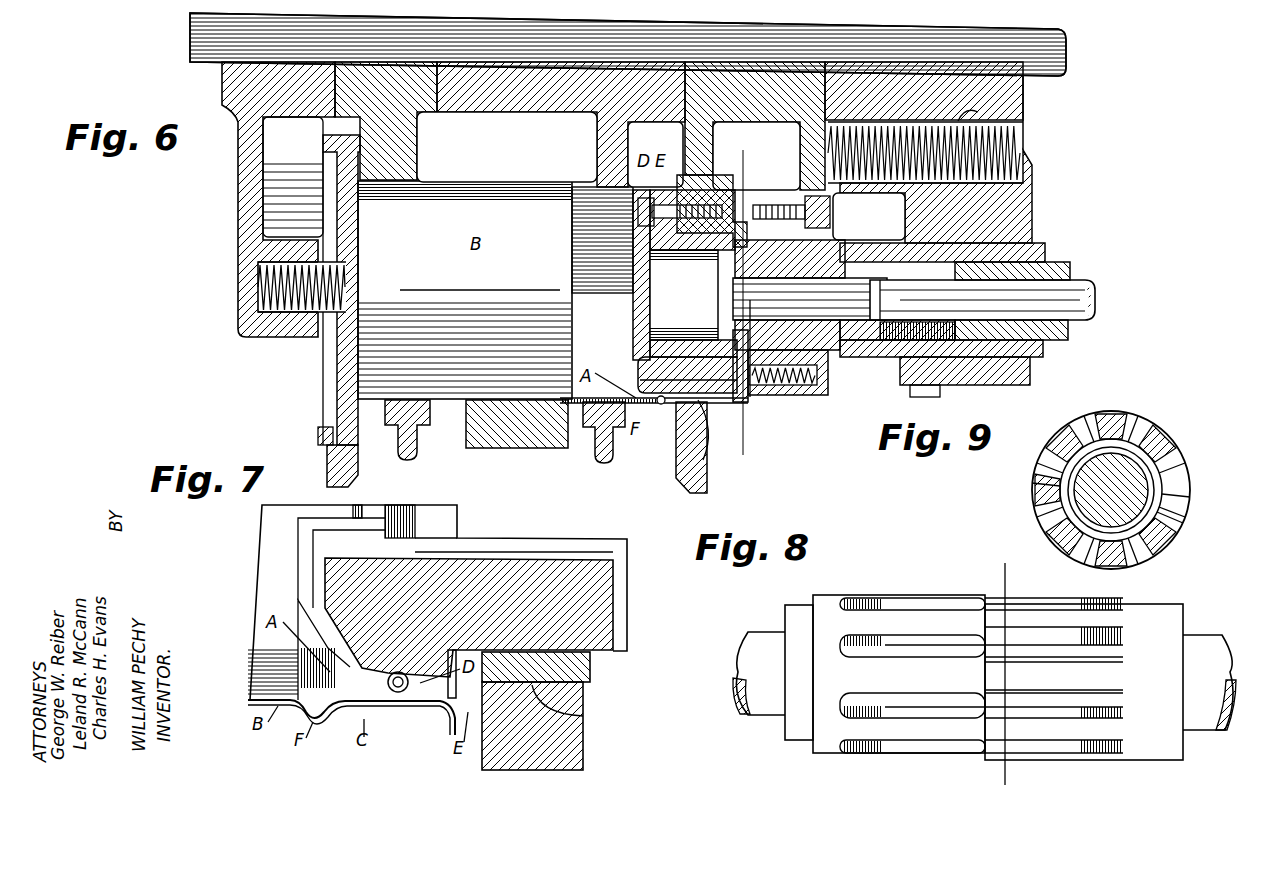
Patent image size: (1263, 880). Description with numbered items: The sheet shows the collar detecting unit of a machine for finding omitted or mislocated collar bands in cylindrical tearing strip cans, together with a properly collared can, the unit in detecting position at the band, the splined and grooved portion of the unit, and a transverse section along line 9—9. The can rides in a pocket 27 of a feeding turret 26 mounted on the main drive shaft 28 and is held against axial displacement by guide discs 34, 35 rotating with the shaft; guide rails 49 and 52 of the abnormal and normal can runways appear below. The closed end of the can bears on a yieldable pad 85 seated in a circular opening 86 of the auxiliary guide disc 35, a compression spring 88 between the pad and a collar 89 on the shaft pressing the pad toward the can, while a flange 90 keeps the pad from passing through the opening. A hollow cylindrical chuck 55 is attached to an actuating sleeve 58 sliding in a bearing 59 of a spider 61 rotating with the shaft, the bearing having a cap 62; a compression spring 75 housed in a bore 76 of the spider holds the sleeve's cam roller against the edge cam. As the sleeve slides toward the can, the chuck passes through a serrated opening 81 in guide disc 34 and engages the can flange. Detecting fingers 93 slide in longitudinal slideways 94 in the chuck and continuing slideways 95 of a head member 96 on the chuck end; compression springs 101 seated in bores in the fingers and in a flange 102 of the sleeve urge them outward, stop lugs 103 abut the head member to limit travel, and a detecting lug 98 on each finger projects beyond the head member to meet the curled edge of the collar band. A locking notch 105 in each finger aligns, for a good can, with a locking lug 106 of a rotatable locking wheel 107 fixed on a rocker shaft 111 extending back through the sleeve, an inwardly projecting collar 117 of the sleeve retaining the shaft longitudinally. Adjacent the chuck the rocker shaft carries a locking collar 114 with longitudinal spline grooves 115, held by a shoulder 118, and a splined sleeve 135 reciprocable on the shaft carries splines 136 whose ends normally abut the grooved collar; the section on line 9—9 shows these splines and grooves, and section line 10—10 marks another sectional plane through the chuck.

In FIG. 6, the main drive shaft 28 is at (1068, 50).
In FIG. 6, the feeding turrets 26 is at (400, 137).
In FIG. 6, the can receiving and propelling pockets 27 is at (397, 172).
In FIG. 6, the serrated opening 81 is at (697, 163).
In FIG. 7, the serrated opening 81 is at (585, 714).
In FIG. 6, the circular openings 86 is at (332, 128).
In FIG. 6, the collar 89 is at (238, 197).
In FIG. 6, the compression springs 88 is at (258, 288).
In FIG. 6, the yieldable pad 85 is at (337, 372).
In FIG. 6, the flange 90 is at (318, 440).
In FIG. 6, the auxiliary guide disc 35 is at (358, 480).
In FIG. 6, the guide rails 52 is at (412, 447).
In FIG. 6, the guide rails 49 is at (520, 428).
In FIG. 6, the guide disc 34 is at (680, 470).
In FIG. 7, the guide disc 34 is at (565, 745).
In FIG. 6, the locking lugs 106 is at (745, 222).
In FIG. 6, the section line 10 is at (730, 145).
In FIG. 6, the hollow cylindrical chuck 55 is at (767, 202).
In FIG. 7, the hollow cylindrical chuck 55 is at (578, 672).
In FIG. 6, the spider 61 is at (1013, 105).
In FIG. 6, the bores 76 is at (1013, 122).
In FIG. 6, the compression springs 75 is at (1010, 147).
In FIG. 6, the bearing 59 is at (1018, 208).
In FIG. 6, the shoulder 118 is at (898, 245).
In FIG. 6, the head member 96 is at (641, 297).
In FIG. 7, the head member 96 is at (570, 550).
In FIG. 6, the continuing slideways 95 is at (657, 350).
In FIG. 7, the continuing slideways 95 is at (528, 552).
In FIG. 6, the detecting fingers 93 is at (642, 367).
In FIG. 7, the detecting fingers 93 is at (600, 590).
In FIG. 6, the stop lugs 103 is at (717, 354).
In FIG. 6, the detecting lug 98 is at (660, 406).
In FIG. 7, the detecting lug 98 is at (428, 692).
In FIG. 6, the locking notch 105 is at (742, 375).
In FIG. 6, the longitudinal slideways 94 is at (751, 380).
In FIG. 6, the compression springs 101 is at (800, 375).
In FIG. 6, the flange 102 is at (825, 390).
In FIG. 6, the locking wheel 107 is at (758, 250).
In FIG. 6, the inwardly projecting collar 117 is at (792, 325).
In FIG. 6, the rocker shaft 111 is at (1073, 290).
In FIG. 8, the rocker shaft 111 is at (1203, 650).
In FIG. 9, the rocker shaft 111 is at (1085, 498).
In FIG. 6, the splined sleeve 135 is at (1053, 262).
In FIG. 8, the splined sleeve 135 is at (1153, 613).
In FIG. 9, the splined sleeve 135 is at (1155, 554).
In FIG. 6, the locking collar 114 is at (875, 332).
In FIG. 8, the locking collar 114 is at (833, 607).
In FIG. 9, the locking collar 114 is at (1170, 470).
In FIG. 6, the splines 136 is at (942, 330).
In FIG. 8, the splines 136 is at (1045, 733).
In FIG. 9, the splines 136 is at (1115, 414).
In FIG. 8, the spline grooves 115 is at (896, 640).
In FIG. 9, the spline grooves 115 is at (1042, 462).
In FIG. 6, the actuating sleeve 58 is at (1045, 350).
In FIG. 6, the caps 62 is at (1020, 375).
In FIG. 8, the section line 9— 9 is at (979, 572).